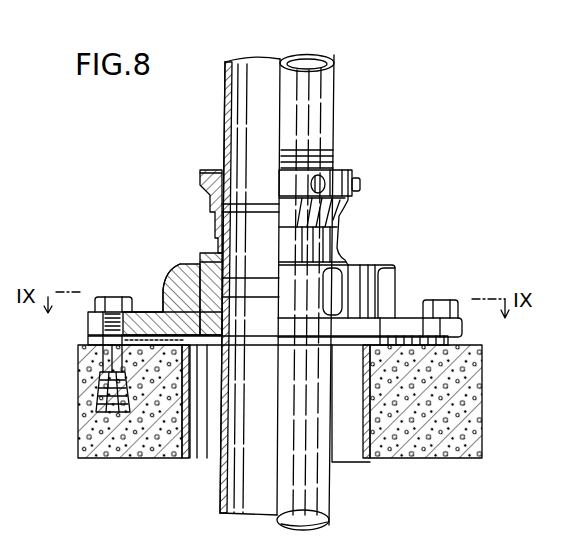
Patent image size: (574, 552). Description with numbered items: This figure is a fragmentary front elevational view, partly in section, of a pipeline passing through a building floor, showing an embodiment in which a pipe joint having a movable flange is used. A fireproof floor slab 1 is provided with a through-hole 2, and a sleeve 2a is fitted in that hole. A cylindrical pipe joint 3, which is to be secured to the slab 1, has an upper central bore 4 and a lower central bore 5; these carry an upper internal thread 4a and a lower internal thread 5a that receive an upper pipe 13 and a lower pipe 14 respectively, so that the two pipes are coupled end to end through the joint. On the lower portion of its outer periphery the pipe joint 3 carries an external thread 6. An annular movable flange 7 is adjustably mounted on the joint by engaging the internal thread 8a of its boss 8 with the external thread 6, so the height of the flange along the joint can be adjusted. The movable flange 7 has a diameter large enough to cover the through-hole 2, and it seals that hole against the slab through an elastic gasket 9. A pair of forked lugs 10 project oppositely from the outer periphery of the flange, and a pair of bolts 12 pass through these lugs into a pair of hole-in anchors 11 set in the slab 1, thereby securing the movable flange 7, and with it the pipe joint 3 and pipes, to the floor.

The fireproof floor slab 1 is at (110, 458).
The through-hole 2 is at (194, 452).
The sleeve 2a is at (186, 459).
The cylindrical pipe joint 3 is at (328, 243).
The upper central bore 4 is at (248, 193).
The upper internal thread 4a is at (205, 174).
The lower central bore 5 is at (240, 262).
The lower internal thread 5a is at (213, 262).
The external thread 6 is at (175, 266).
The annular movable flange 7 is at (401, 320).
The boss 8 is at (378, 282).
The internal thread of boss 8a is at (166, 297).
The elastic gasket 9 is at (118, 346).
The forked lugs 10 is at (88, 324).
The hole-in anchors 11 is at (98, 410).
The bolts 12 is at (106, 296).
The upper pipe 13 is at (330, 97).
The lower pipe 14 is at (322, 490).